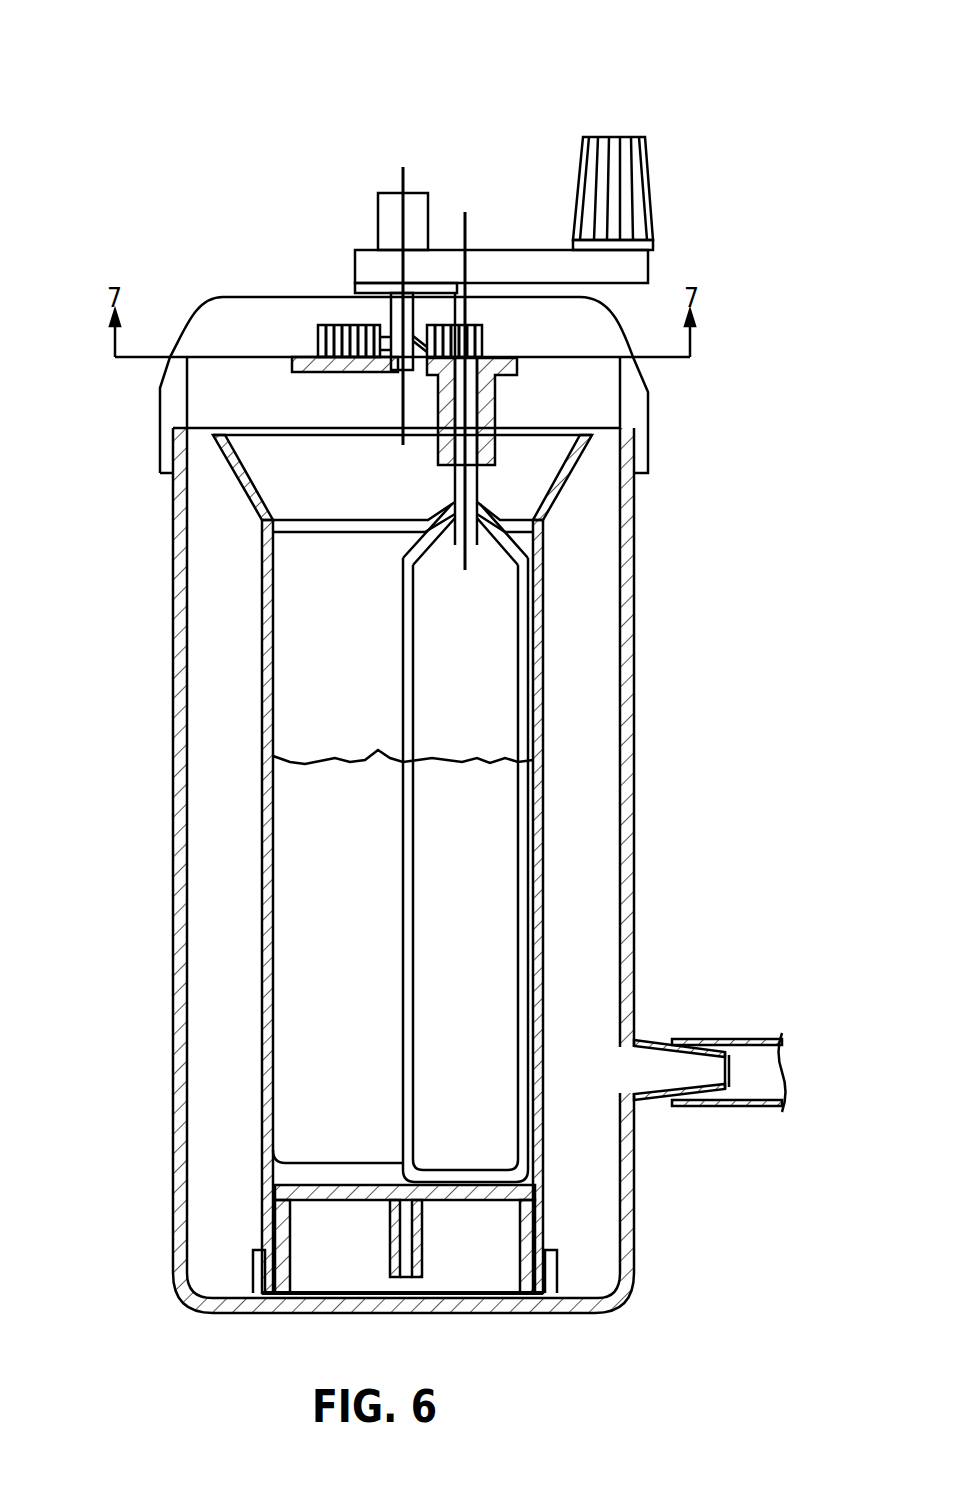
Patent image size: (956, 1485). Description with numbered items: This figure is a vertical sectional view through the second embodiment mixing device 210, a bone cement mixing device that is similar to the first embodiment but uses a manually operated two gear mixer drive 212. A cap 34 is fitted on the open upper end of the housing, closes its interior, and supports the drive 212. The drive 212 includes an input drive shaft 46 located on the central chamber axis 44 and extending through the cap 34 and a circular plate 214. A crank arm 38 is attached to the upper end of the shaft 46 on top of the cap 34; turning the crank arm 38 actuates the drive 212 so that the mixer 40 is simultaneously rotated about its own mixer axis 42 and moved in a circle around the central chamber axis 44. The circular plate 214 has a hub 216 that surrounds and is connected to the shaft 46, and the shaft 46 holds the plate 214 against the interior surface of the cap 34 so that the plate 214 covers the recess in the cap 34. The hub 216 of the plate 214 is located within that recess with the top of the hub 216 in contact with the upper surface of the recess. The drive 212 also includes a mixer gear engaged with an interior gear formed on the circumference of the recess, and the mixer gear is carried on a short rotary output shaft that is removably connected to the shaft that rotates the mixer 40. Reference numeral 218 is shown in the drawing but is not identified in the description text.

The second embodiment mixing device 210 is at (678, 108).
The cap 34 is at (255, 295).
The crank arm 38 is at (500, 270).
The mixer 40 is at (503, 550).
The mixer axis 42 is at (462, 566).
The central chamber axis 44 is at (402, 178).
The input drive shaft 46 is at (383, 317).
The two gear mixer drive 212 is at (483, 323).
The circular plate 214 is at (323, 362).
The hub 216 is at (320, 324).
The nut 218 is at (447, 360).